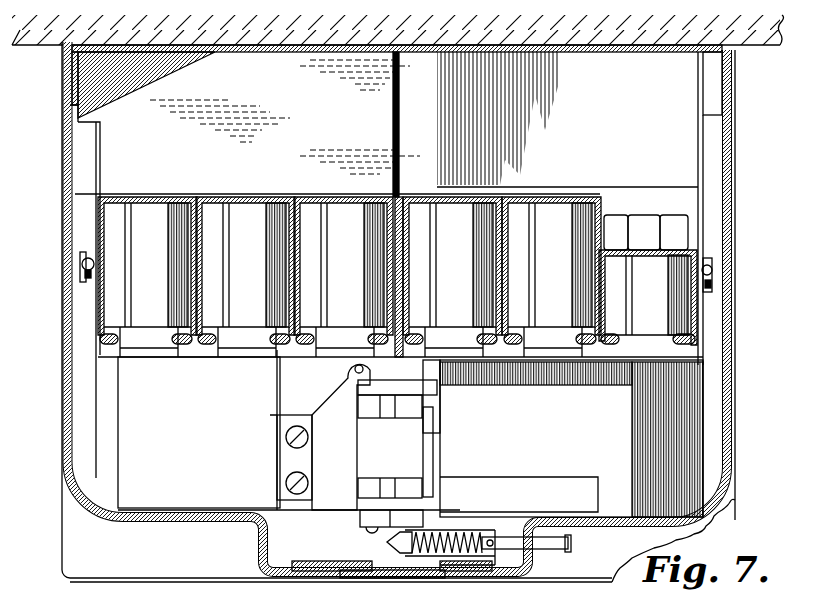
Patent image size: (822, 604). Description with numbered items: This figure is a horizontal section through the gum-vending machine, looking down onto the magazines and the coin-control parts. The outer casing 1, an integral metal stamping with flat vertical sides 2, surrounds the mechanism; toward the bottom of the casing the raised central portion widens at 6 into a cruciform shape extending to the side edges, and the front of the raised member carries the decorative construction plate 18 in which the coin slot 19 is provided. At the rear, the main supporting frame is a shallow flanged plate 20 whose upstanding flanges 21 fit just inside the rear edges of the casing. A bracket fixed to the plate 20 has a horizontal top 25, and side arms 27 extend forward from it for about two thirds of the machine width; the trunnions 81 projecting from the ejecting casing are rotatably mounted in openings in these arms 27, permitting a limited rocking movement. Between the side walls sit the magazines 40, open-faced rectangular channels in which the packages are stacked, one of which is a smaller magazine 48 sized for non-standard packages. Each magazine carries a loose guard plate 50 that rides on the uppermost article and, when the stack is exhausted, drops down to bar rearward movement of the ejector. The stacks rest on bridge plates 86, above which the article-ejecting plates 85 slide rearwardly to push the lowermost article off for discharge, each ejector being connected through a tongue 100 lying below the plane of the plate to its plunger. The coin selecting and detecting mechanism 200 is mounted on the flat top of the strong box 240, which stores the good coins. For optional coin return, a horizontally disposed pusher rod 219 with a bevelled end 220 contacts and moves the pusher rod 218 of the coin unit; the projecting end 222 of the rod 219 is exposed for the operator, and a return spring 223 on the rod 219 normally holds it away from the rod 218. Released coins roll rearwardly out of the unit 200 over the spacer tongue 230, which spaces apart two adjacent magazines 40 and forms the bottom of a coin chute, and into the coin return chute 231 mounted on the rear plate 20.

The outer casing 1 is at (150, 520).
The flat vertical sides 2 is at (66, 205).
The widened cruciform portion 6 is at (208, 584).
The decorative construction plate 18 is at (470, 578).
The coin slot 19 is at (395, 578).
The flanged plate 20 is at (247, 52).
The upstanding flanges 21 is at (68, 76).
The horizontal top 25 is at (665, 138).
The side arms 27 is at (97, 233).
The magazines 40 is at (336, 196).
The smaller magazine 48 is at (700, 316).
The guard plate 50 is at (200, 196).
The trunnions 81 is at (82, 258).
The article-ejecting plates 85 is at (238, 356).
The bridge plates 86 is at (673, 242).
The tongue 100 is at (650, 232).
The coin selecting and detecting mechanism 200 is at (415, 448).
The pusher rod 218 is at (362, 516).
The horizontal pusher rod 219 is at (455, 528).
The bevelled end 220 is at (385, 540).
The projecting end 222 is at (570, 549).
The return spring 223 is at (492, 530).
The spacer tongue 230 is at (397, 235).
The coin return chute 231 is at (128, 135).
The strong box 240 is at (680, 412).